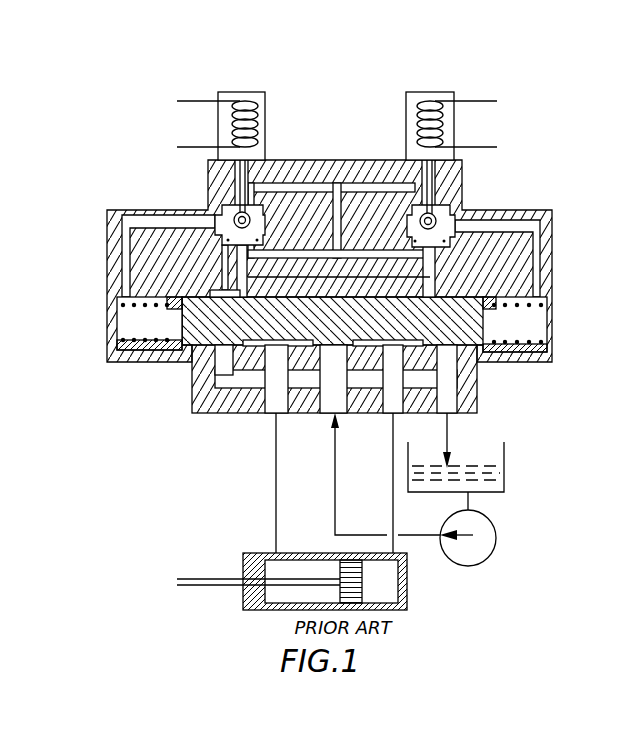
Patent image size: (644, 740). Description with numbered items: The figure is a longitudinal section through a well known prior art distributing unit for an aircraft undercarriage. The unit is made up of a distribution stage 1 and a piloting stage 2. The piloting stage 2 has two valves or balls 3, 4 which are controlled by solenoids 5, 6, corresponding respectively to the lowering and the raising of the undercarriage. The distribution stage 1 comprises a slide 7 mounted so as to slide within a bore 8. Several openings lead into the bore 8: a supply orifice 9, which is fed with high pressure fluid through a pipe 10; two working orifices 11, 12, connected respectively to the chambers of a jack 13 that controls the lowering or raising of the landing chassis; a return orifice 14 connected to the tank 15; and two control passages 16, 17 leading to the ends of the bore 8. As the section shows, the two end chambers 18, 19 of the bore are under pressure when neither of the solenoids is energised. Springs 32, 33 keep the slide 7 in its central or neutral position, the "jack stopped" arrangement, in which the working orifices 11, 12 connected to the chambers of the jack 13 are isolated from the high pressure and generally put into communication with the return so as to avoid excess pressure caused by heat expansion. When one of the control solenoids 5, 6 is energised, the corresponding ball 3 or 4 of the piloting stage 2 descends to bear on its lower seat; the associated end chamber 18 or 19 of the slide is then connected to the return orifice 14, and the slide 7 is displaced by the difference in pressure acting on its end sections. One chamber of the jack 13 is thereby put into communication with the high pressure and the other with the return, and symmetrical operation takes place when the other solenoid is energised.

The distribution stage 1 is at (548, 410).
The piloting stage 2 is at (520, 192).
The ball 3 is at (225, 213).
The ball 4 is at (440, 216).
The solenoid 5 is at (240, 100).
The solenoid 6 is at (438, 103).
The slide 7 is at (205, 333).
The bore 8 is at (258, 343).
The supply orifice 9 is at (335, 350).
The pipe 10 is at (337, 490).
The working orifice 11 is at (277, 390).
The working orifice 12 is at (392, 398).
The jack 13 is at (262, 604).
The return orifice 14 is at (445, 380).
The tank 15 is at (504, 480).
The control passage 16 is at (125, 262).
The control passage 17 is at (535, 267).
The end chamber 18 is at (128, 325).
The end chamber 19 is at (530, 322).
The spring 32 is at (137, 345).
The spring 33 is at (520, 344).